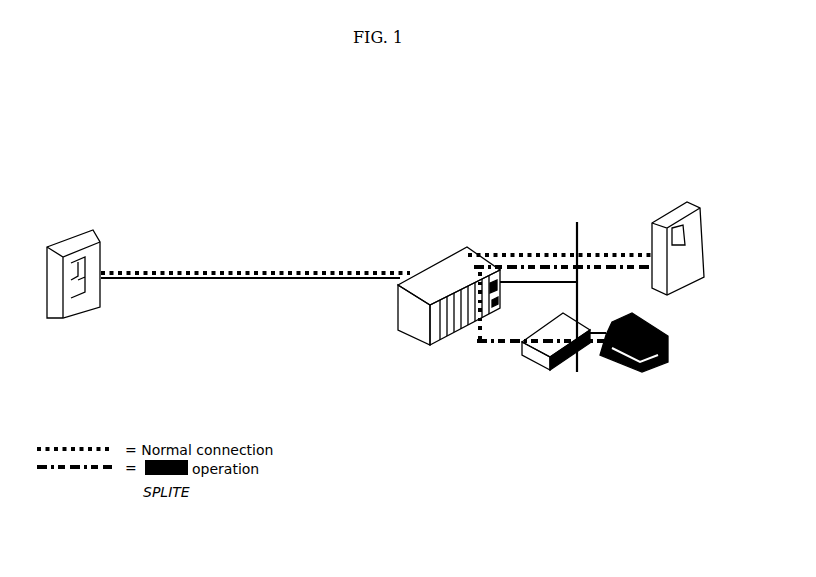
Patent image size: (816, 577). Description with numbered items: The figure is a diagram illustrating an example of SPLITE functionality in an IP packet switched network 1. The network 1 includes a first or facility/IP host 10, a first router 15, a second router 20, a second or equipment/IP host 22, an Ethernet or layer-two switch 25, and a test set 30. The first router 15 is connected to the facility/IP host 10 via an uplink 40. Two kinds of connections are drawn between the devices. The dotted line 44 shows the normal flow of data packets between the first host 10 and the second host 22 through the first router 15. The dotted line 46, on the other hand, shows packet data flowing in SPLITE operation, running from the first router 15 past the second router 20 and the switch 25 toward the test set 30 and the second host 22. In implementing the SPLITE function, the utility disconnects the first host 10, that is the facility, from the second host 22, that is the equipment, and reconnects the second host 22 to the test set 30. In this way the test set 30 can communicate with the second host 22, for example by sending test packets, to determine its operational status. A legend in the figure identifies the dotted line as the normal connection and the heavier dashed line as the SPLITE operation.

The network 1 is at (367, 139).
The facility/IP host 10 is at (73, 307).
The first router 15 is at (415, 315).
The second router 20 is at (563, 358).
The equipment/IP host 22 is at (698, 257).
The Ethernet or layer 2 switch 25 is at (577, 228).
The test set 30 is at (668, 348).
The uplink 40 is at (258, 279).
The dotted line 44 is at (210, 272).
The dotted line 46 is at (477, 343).